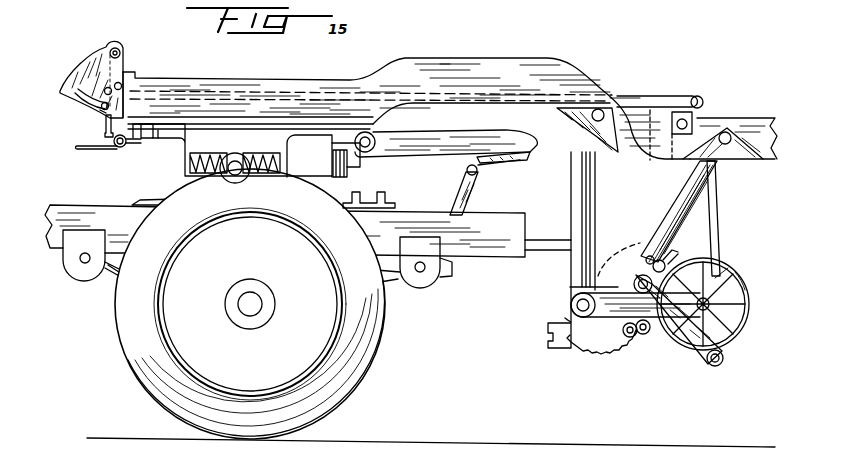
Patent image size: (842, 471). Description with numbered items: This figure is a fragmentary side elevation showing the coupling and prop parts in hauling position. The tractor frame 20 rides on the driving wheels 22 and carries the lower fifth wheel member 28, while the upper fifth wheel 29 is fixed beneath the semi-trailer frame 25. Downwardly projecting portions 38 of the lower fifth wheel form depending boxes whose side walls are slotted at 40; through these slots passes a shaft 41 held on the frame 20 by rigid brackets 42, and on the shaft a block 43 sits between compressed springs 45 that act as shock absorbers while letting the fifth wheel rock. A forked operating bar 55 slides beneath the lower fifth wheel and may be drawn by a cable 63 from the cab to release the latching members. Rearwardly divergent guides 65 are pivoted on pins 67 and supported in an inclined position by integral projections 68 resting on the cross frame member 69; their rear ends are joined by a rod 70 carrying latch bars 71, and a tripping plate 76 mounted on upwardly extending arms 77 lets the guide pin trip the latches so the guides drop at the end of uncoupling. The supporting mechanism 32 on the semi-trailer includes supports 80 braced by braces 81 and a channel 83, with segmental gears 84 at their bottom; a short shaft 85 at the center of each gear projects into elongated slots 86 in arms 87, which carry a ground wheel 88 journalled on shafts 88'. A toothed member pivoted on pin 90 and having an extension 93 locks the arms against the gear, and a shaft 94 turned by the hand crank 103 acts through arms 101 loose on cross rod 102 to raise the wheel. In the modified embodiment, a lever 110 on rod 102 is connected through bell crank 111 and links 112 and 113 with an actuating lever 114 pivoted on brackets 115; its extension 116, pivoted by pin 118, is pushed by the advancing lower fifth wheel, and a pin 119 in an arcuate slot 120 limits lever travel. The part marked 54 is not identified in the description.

The frame 20 is at (63, 206).
The driving wheels 22 is at (367, 338).
The frame 25 is at (470, 68).
The lower fifth wheel member 28 is at (197, 124).
The upper fifth wheel 29 is at (247, 124).
The prop or supporting mechanism 32 is at (569, 243).
The downwardly projecting portions 38 is at (180, 152).
The slots 40 is at (268, 138).
The shaft 41 is at (235, 176).
The brackets 42 is at (168, 198).
The block 43 is at (208, 140).
The springs 45 is at (290, 158).
The lug 54 is at (160, 128).
The forked operating bar 55 is at (121, 148).
The cable 63 is at (100, 150).
The rearwardly divergent guides 65 is at (420, 143).
The pins 67 is at (364, 132).
The projections 68 is at (340, 178).
The cross frame member 69 is at (386, 195).
The rod 70 is at (473, 165).
The latch bars 71 is at (458, 186).
The tripping plate 76 is at (517, 157).
The arms 77 is at (490, 168).
The supports 80 is at (571, 180).
The braces 81 is at (682, 192).
The channel 83 is at (546, 336).
The segmental gears 84 is at (586, 350).
The short shaft 85 is at (570, 304).
The elongated slots 86 is at (575, 292).
The arms 87 is at (632, 338).
The wheel 88 is at (721, 304).
The shafts 88' is at (758, 276).
The pin 90 is at (655, 338).
The extension 93 is at (676, 262).
The shaft 94 is at (636, 276).
The arms 101 is at (570, 262).
The shaft 102 is at (657, 238).
The hand crank 103 is at (725, 348).
The lever 110 is at (714, 277).
The bell crank 111 is at (700, 116).
The link 112 is at (721, 218).
The link 113 is at (235, 90).
The actuating lever 114 is at (123, 54).
The brackets 115 is at (95, 68).
The extension 116 is at (105, 131).
The pin 118 is at (136, 113).
The pin 119 is at (98, 110).
The arcuate slot 120 is at (74, 92).